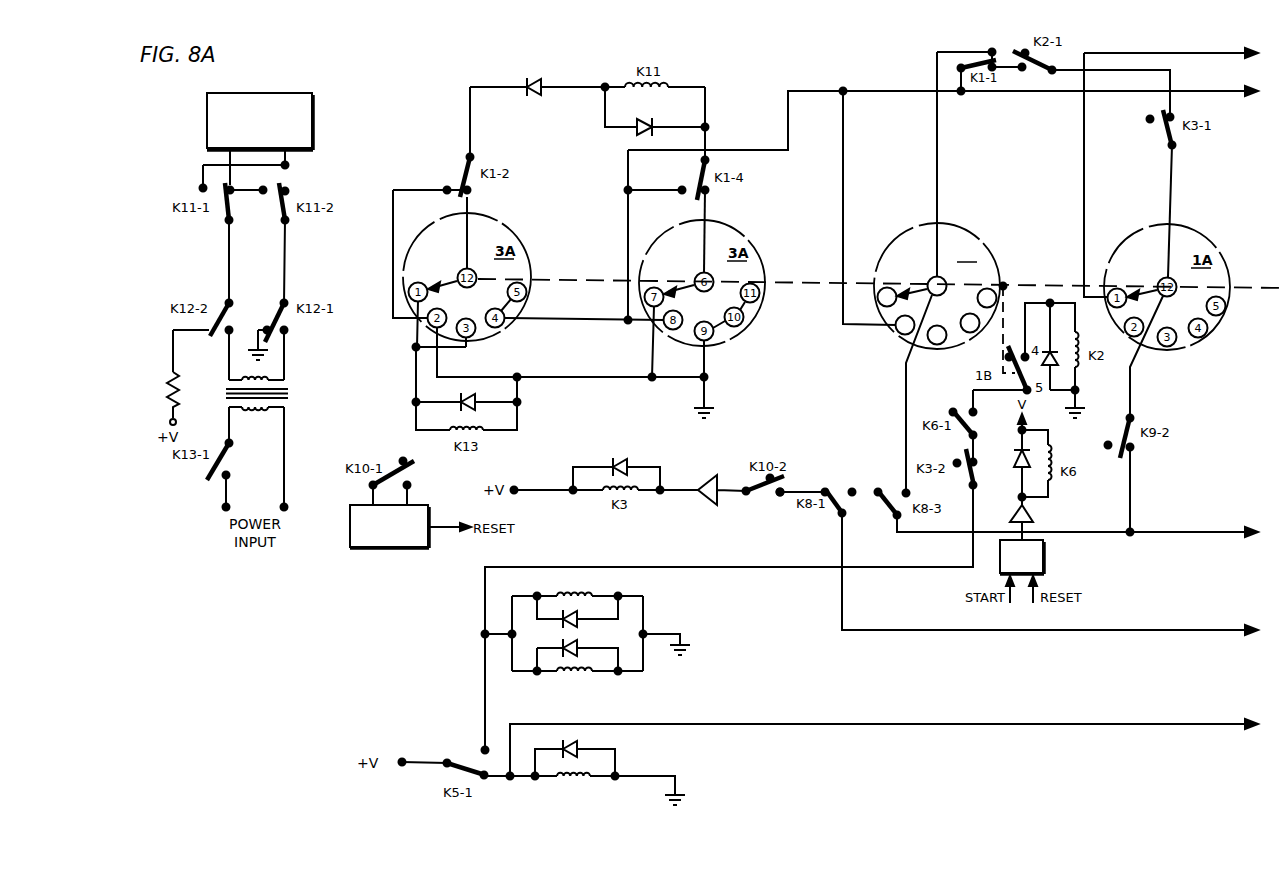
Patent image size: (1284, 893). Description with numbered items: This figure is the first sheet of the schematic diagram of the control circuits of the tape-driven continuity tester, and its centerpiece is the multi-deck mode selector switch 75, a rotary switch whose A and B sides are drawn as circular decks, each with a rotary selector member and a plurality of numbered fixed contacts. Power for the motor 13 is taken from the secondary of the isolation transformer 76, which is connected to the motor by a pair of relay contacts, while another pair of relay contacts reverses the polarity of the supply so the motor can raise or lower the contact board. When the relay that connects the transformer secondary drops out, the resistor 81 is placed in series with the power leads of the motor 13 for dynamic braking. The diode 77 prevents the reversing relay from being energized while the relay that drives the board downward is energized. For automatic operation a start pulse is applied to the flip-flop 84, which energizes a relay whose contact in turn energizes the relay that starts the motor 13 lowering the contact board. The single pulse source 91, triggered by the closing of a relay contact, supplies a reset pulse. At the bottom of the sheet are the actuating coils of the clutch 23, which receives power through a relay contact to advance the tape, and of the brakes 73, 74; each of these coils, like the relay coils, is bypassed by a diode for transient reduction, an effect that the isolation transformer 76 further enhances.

The motor 13 is at (268, 137).
The isolation transformer 76 is at (290, 391).
The resistor 81 is at (166, 389).
The diode 77 is at (537, 78).
The mode selector switch 75 is at (975, 229).
The single pulse source 91 is at (429, 506).
The flip-flop 84 is at (1048, 566).
The brake 73 is at (585, 598).
The brake 74 is at (580, 674).
The clutch 23 is at (575, 780).